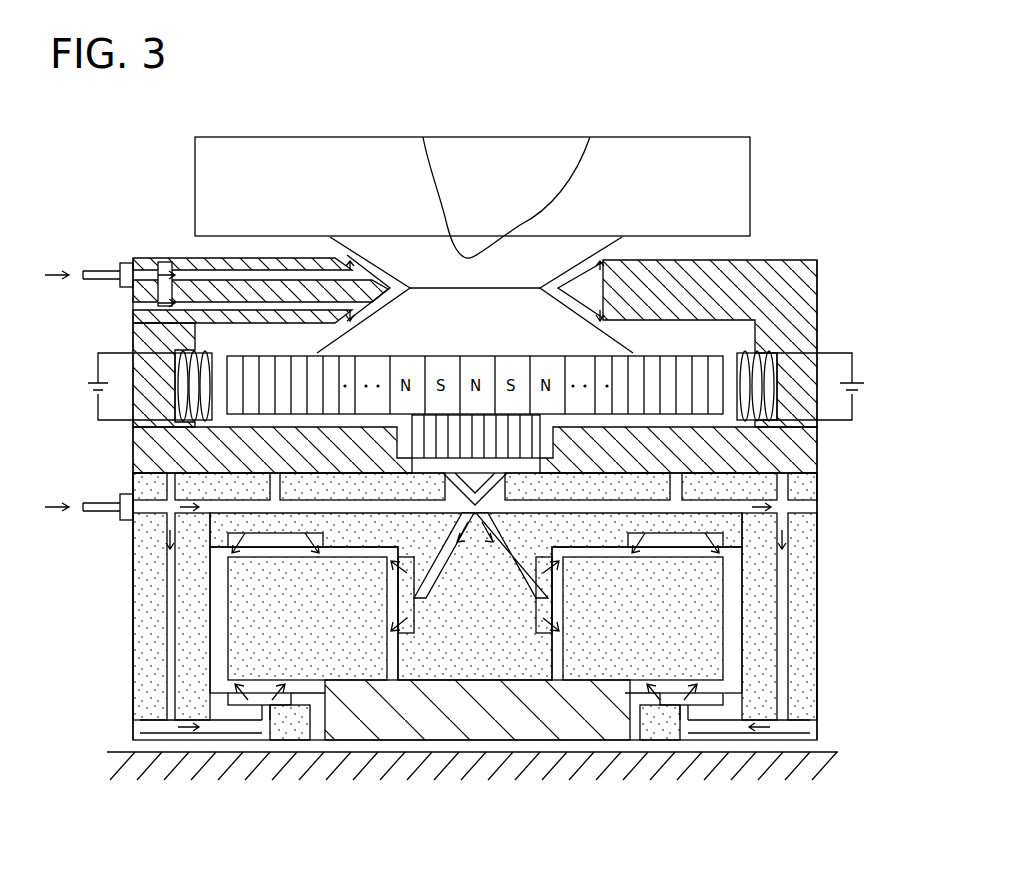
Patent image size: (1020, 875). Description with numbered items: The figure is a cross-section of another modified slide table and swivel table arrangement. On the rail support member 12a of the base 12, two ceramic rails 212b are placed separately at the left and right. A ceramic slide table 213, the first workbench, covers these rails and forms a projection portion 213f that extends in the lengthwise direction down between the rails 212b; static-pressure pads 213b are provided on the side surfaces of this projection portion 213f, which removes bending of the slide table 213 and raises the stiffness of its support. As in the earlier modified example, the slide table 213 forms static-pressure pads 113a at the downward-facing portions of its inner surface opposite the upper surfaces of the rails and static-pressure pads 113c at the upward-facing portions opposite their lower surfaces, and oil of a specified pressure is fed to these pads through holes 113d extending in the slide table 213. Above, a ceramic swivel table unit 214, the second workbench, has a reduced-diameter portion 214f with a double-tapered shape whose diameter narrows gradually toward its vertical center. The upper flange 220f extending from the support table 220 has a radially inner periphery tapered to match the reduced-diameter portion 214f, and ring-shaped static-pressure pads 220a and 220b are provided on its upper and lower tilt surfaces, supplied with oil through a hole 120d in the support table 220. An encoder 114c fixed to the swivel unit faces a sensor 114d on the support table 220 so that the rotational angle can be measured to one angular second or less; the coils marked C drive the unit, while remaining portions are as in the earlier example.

The swivel table unit 214 is at (750, 153).
The reduced-diameter portion 214f is at (590, 243).
The support table 220 is at (459, 468).
The ring-shaped static-pressure pad 220a is at (335, 258).
The ring-shaped static-pressure pad 220b is at (330, 335).
The upper flange 220f is at (690, 291).
The hole 120d is at (160, 262).
The coil C is at (178, 395).
The sensor 114d is at (380, 440).
The encoder 114c is at (553, 430).
The slide table 213 is at (469, 668).
The projection portion 213f is at (487, 660).
The static-pressure pad 213b is at (405, 632).
The rail 212b is at (340, 665).
The static-pressure pad 113a is at (235, 540).
The static-pressure pad 113c is at (282, 715).
The hole 113d is at (165, 680).
The rail support member 12a is at (440, 762).
The base 12 is at (828, 752).